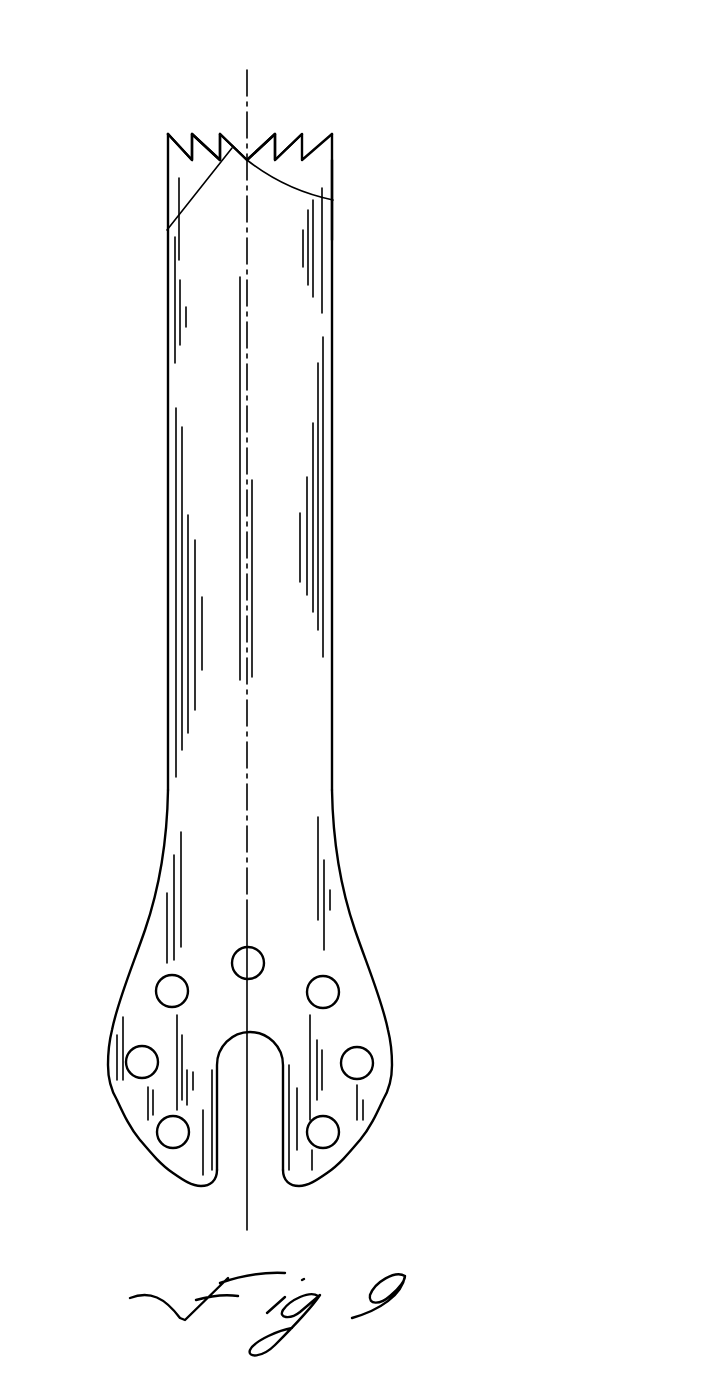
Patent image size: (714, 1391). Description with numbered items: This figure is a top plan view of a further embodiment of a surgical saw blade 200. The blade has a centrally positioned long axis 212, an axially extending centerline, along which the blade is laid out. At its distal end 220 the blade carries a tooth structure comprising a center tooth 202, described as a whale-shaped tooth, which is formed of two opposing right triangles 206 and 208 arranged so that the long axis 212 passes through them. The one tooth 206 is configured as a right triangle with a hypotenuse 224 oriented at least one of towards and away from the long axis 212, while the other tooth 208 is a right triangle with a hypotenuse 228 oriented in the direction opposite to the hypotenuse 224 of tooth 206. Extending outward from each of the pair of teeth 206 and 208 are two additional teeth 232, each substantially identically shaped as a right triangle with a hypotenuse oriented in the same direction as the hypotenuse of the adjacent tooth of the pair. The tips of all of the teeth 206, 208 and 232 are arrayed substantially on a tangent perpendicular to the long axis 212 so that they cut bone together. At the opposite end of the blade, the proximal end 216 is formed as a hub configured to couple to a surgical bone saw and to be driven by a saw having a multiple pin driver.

The surgical saw blade 200 is at (309, 615).
The center tooth 202 is at (260, 80).
The right triangle tooth 206 is at (262, 146).
The right triangle tooth 208 is at (221, 147).
The additional tooth 232 is at (220, 150).
The distal end 220 is at (333, 173).
The hypotenuse 224 is at (333, 200).
The hypotenuse 228 is at (167, 230).
The centrally positioned long axis 212 is at (250, 1065).
The proximal end 216 is at (380, 1007).